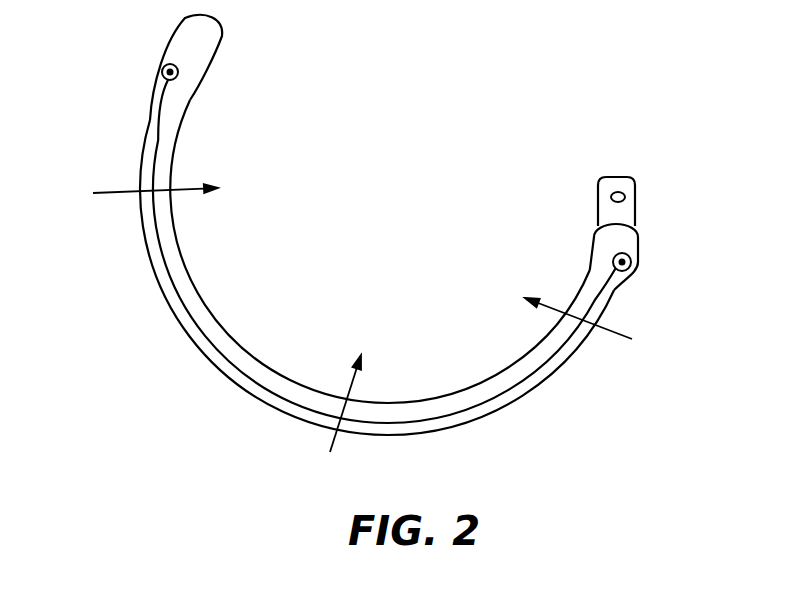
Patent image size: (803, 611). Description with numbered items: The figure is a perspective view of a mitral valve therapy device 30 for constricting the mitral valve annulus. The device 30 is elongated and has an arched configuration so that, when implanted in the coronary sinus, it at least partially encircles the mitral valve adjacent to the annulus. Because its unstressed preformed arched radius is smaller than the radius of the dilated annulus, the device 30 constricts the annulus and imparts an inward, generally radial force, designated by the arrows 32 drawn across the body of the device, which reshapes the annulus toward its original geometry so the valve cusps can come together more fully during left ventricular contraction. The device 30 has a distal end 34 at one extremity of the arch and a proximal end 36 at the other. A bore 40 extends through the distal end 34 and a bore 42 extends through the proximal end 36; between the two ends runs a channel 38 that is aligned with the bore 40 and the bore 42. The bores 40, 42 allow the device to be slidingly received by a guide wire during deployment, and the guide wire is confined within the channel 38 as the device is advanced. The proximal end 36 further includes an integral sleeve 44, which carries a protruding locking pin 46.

The mitral valve therapy device 30 is at (120, 358).
The arrows 32 is at (120, 191).
The distal end 34 is at (185, 24).
The proximal end 36 is at (638, 222).
The channel 38 is at (148, 236).
The bore 40 is at (162, 72).
The bore 42 is at (631, 266).
The integral sleeve 44 is at (630, 210).
The locking pin 46 is at (620, 188).